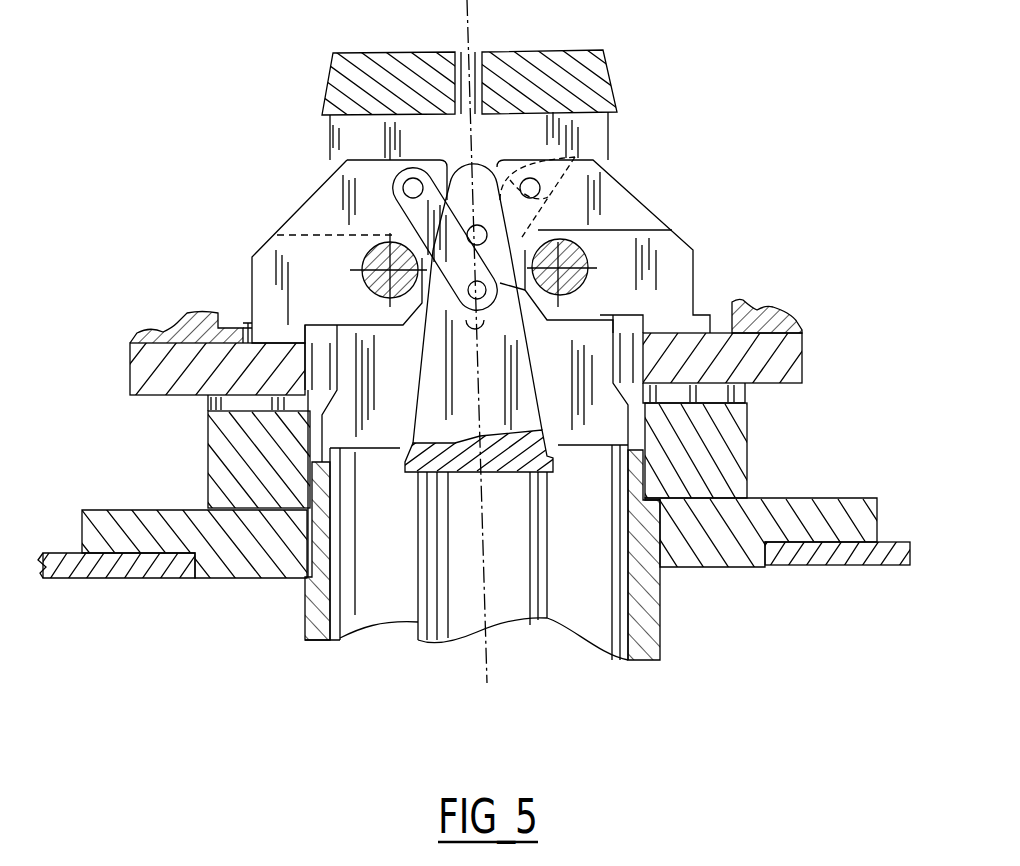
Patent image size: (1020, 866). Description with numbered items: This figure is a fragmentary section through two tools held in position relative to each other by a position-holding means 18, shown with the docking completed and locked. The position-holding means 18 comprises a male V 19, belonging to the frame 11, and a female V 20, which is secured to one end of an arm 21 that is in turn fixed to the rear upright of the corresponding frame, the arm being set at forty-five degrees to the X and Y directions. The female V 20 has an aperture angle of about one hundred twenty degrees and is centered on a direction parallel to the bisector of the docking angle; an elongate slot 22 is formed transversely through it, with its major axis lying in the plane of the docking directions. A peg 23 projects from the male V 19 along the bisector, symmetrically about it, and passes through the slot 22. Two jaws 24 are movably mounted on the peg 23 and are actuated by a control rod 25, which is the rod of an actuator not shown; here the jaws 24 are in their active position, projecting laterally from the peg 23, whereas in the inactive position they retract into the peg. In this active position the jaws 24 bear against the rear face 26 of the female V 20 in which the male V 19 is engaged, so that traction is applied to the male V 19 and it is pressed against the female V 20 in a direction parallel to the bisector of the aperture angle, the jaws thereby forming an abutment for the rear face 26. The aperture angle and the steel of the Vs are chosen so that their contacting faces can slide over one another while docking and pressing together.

The frame 11 is at (897, 543).
The position-holding means 18 is at (739, 346).
The male V 19 is at (225, 410).
The female V 20 is at (697, 378).
The arm 21 is at (185, 313).
The elongate slot 22 is at (643, 293).
The peg 23 is at (590, 82).
The jaws 24 is at (310, 236).
The control rod 25 is at (445, 565).
The rear face 26 is at (267, 338).